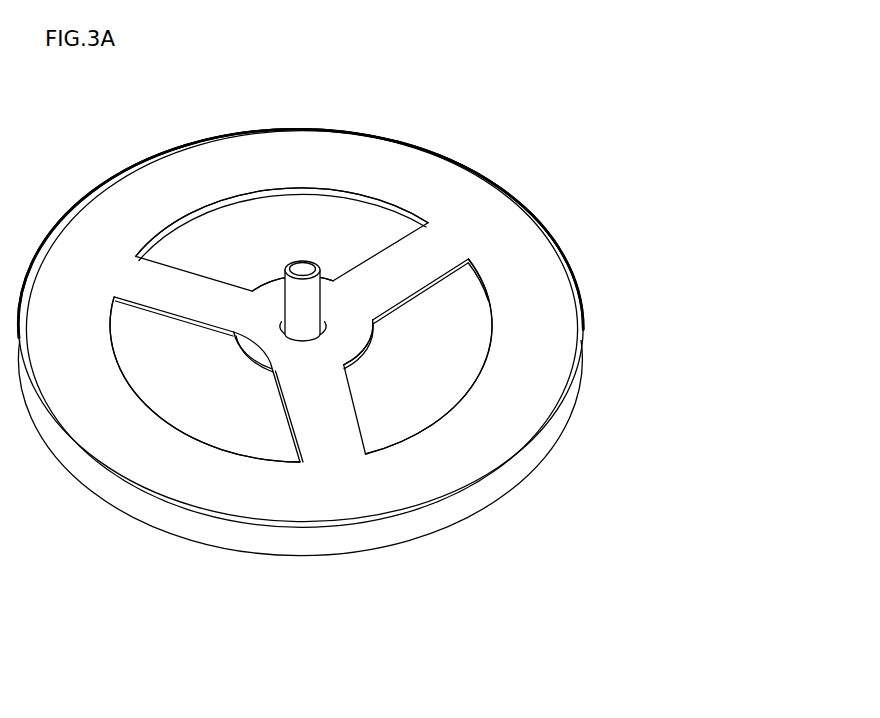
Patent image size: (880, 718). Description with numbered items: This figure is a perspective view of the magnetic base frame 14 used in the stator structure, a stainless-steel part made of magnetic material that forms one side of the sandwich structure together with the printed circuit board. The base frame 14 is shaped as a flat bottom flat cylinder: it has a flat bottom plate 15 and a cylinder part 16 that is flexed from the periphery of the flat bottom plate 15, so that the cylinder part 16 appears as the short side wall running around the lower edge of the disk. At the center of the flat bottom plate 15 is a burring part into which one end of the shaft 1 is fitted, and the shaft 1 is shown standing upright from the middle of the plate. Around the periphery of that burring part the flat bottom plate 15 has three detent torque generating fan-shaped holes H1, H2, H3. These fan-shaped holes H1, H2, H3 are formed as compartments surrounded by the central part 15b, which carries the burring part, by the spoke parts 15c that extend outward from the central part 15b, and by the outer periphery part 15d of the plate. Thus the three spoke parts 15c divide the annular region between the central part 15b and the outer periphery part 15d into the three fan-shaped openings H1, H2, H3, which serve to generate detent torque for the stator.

The shaft 1 is at (298, 268).
The base frame 14 is at (385, 355).
The flat bottom plate 15 is at (347, 355).
The central part 15b is at (370, 338).
The spoke parts 15c is at (390, 257).
The outer periphery part 15d is at (306, 510).
The cylinder part 16 is at (540, 457).
The detent torque generating fan-shaped hole H1 is at (493, 345).
The detent torque generating fan-shaped hole H2 is at (157, 409).
The detent torque generating fan-shaped hole H3 is at (284, 200).